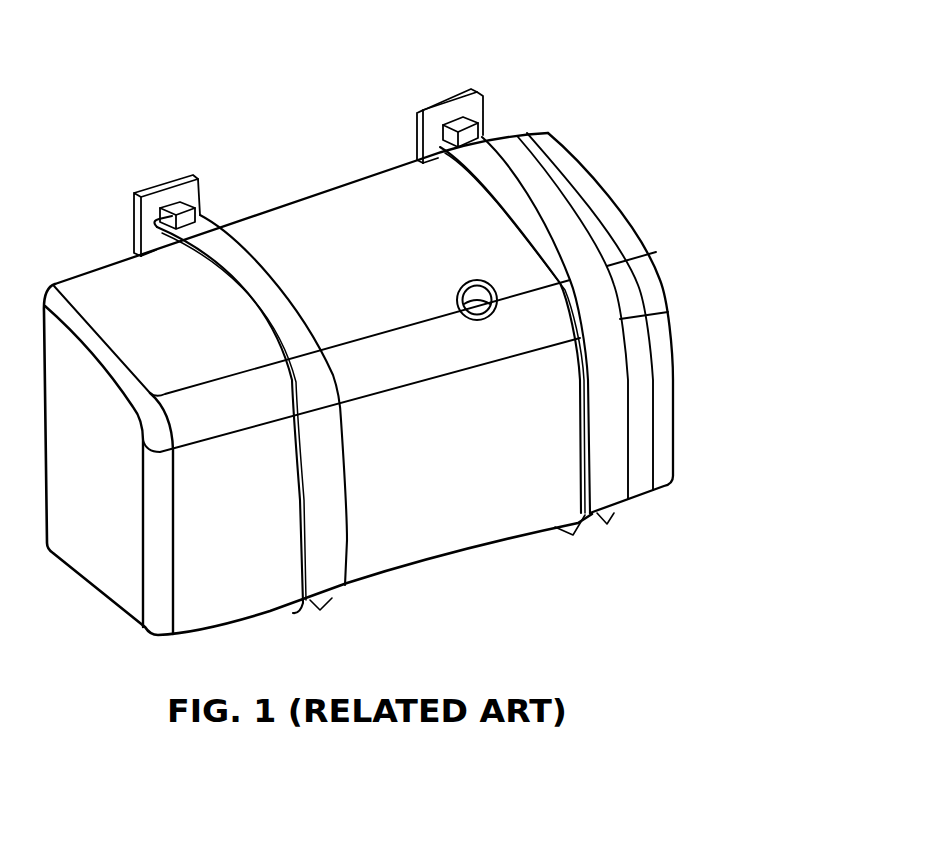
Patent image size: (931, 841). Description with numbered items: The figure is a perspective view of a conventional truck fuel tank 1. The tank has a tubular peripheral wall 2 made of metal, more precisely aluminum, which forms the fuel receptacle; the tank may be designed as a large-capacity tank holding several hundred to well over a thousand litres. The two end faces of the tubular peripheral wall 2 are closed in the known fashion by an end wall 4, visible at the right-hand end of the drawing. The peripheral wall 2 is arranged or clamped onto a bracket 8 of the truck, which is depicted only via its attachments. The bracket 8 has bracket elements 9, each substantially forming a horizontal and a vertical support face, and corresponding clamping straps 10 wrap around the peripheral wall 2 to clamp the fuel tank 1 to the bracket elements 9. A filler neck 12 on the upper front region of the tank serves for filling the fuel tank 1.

The fuel tank 1 is at (618, 136).
The peripheral wall 2 is at (500, 520).
The end wall 4 is at (655, 281).
The bracket 8 is at (466, 82).
The bracket element 9 is at (148, 187).
The clamping strap 10 is at (225, 253).
The filler neck 12 is at (497, 305).